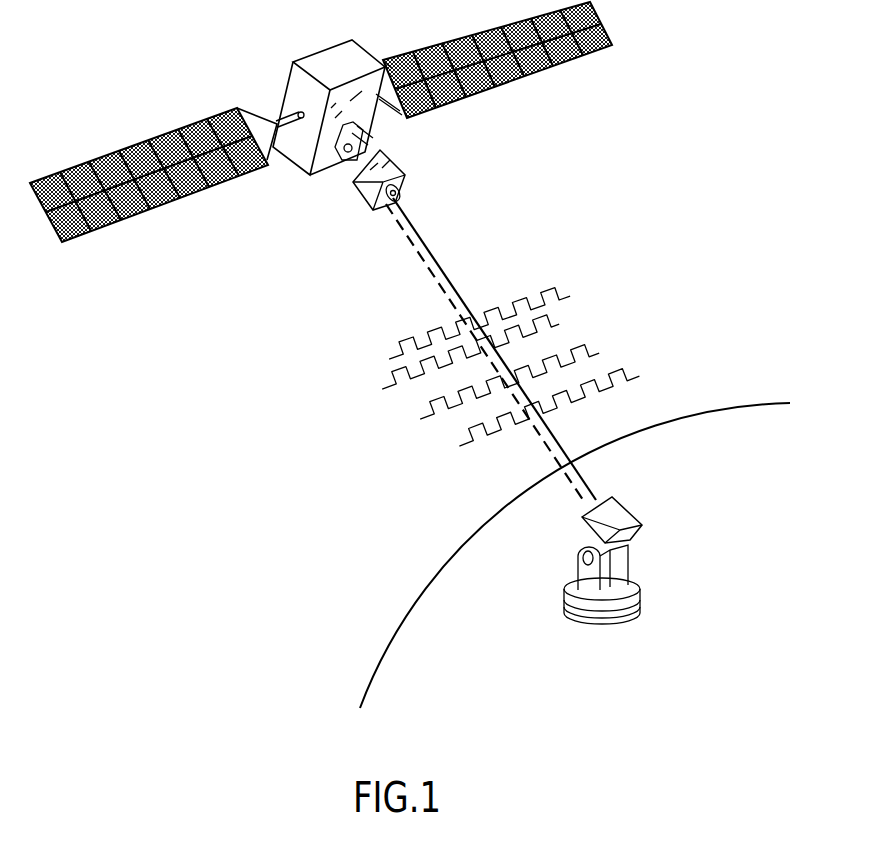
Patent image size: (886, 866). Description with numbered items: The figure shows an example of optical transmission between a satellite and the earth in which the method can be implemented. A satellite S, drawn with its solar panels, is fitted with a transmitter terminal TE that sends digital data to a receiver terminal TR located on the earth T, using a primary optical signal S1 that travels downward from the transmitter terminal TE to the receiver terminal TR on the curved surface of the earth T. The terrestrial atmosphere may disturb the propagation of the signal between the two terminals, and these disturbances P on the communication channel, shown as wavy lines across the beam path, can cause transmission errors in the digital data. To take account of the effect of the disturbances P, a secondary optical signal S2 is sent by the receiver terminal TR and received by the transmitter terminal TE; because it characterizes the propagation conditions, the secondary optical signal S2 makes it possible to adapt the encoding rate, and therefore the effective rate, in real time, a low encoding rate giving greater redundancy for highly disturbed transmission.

The satellite S is at (302, 157).
The transmitter terminal TE is at (362, 190).
The receiver terminal TR is at (618, 513).
The primary optical signal S1 is at (423, 227).
The secondary optical signal S2 is at (437, 303).
The disturbances P is at (608, 262).
The earth T is at (750, 408).